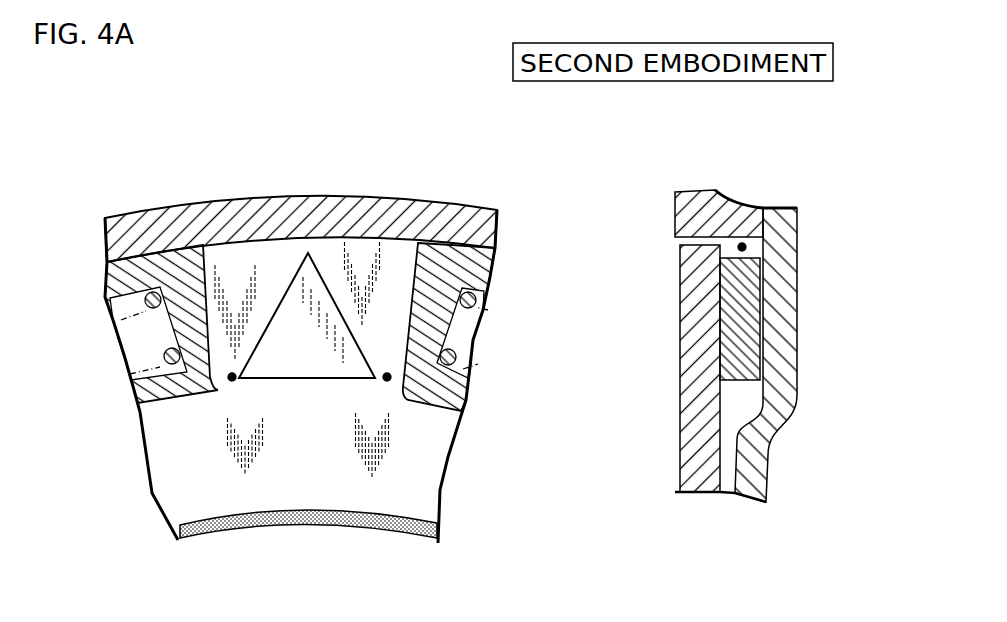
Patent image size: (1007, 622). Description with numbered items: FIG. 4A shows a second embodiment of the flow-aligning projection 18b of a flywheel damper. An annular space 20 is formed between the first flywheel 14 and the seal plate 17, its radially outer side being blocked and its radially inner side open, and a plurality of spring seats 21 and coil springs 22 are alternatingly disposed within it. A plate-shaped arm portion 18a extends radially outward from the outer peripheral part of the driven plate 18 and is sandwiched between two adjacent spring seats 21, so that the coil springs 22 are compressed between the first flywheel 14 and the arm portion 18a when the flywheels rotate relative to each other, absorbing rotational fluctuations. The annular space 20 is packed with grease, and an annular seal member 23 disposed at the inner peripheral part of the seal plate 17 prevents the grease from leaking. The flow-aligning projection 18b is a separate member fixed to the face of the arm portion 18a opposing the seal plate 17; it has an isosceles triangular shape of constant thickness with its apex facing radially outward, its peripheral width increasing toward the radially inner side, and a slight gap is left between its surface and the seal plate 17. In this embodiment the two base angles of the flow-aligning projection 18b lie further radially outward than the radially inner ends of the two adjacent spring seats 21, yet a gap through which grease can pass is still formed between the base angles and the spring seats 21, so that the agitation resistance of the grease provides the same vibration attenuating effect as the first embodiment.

The first flywheel 14 is at (302, 217).
The seal plate 17 is at (787, 352).
The driven plate 18 is at (260, 520).
The arm portion 18a is at (277, 252).
The flow-aligning projection 18b is at (323, 293).
The annular space 20 is at (742, 247).
The spring seat 21 is at (180, 260).
The coil spring 22 is at (148, 307).
The annular seal member 23 is at (283, 513).